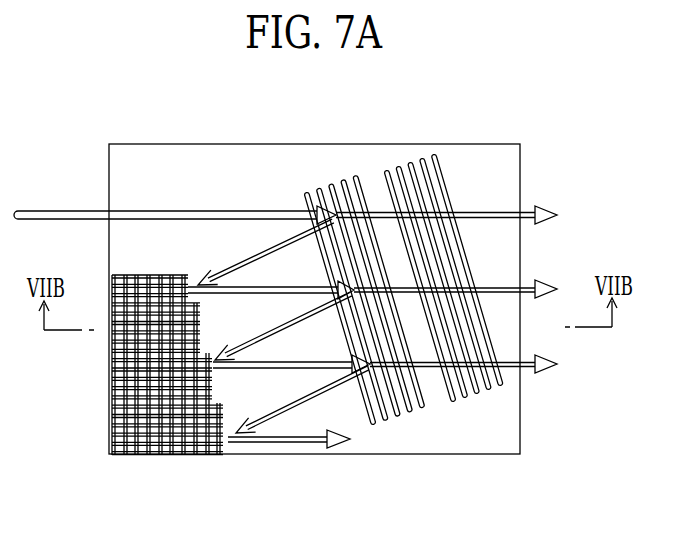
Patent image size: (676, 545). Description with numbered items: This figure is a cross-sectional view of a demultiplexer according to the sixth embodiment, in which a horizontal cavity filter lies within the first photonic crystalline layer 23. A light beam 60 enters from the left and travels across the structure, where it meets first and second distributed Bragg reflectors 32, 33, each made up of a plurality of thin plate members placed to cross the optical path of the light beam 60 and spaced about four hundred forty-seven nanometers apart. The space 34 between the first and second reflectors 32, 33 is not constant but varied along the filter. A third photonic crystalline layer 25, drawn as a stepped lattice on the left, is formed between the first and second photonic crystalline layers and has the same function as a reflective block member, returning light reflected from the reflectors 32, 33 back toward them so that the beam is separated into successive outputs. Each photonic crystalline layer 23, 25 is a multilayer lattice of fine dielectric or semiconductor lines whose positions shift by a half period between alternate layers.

The first photonic crystalline layer 23 is at (200, 144).
The third photonic crystalline layer 25 is at (86, 382).
The first distributed Bragg reflector 32 is at (431, 409).
The second distributed Bragg reflector 33 is at (512, 384).
The space between the first and second reflectors 34 is at (452, 402).
The light beam 60 is at (48, 209).